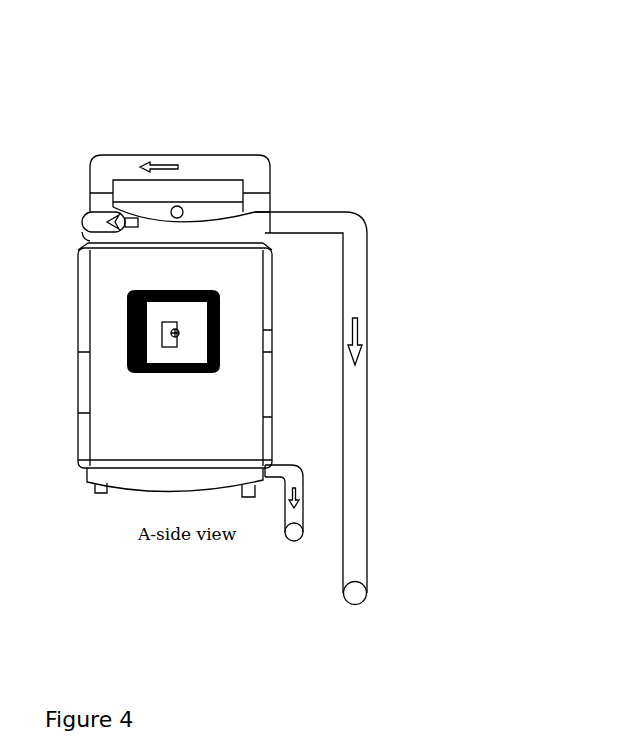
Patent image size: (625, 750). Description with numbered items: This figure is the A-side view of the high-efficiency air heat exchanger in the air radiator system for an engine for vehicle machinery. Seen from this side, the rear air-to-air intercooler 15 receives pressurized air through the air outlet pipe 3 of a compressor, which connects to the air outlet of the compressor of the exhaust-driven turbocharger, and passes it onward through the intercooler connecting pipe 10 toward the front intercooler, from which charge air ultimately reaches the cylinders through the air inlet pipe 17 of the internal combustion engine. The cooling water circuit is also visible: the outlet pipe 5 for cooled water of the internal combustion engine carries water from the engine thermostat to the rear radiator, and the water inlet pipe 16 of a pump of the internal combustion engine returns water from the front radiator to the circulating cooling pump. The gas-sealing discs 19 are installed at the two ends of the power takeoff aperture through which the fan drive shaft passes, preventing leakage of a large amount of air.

The air outlet pipe of a compressor 3 is at (98, 222).
The outlet pipe for cooled water of the internal combustion engine 5 is at (180, 207).
The intercooler connecting pipe 10 is at (238, 167).
The rear air-to-air intercooler 15 is at (110, 445).
The water inlet pipe of a pump of the internal combustion engine 16 is at (300, 537).
The air inlet pipe of the internal combustion engine 17 is at (362, 488).
The gas-sealing discs 19 is at (197, 345).